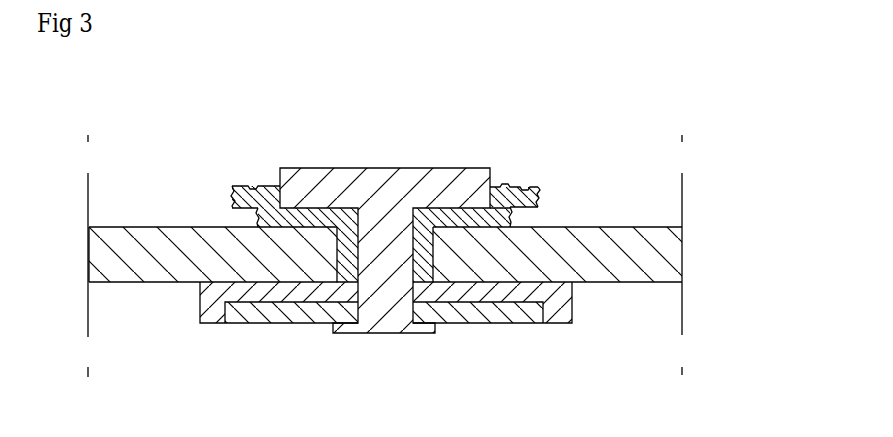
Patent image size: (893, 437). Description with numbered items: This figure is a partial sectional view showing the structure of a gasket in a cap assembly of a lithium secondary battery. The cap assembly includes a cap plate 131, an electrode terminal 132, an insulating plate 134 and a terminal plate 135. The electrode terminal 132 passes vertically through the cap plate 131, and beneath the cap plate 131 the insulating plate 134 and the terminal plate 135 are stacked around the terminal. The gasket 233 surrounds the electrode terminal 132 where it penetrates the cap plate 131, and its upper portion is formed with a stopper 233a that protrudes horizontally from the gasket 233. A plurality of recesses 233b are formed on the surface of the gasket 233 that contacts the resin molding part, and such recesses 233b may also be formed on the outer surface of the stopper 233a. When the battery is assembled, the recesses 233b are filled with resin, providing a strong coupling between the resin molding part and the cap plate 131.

The cap plate 131 is at (147, 235).
The electrode terminal 132 is at (384, 182).
The gasket 233 is at (348, 251).
The stopper 233a is at (514, 198).
The recesses 233b is at (539, 200).
The insulating plate 134 is at (563, 307).
The terminal plate 135 is at (485, 312).